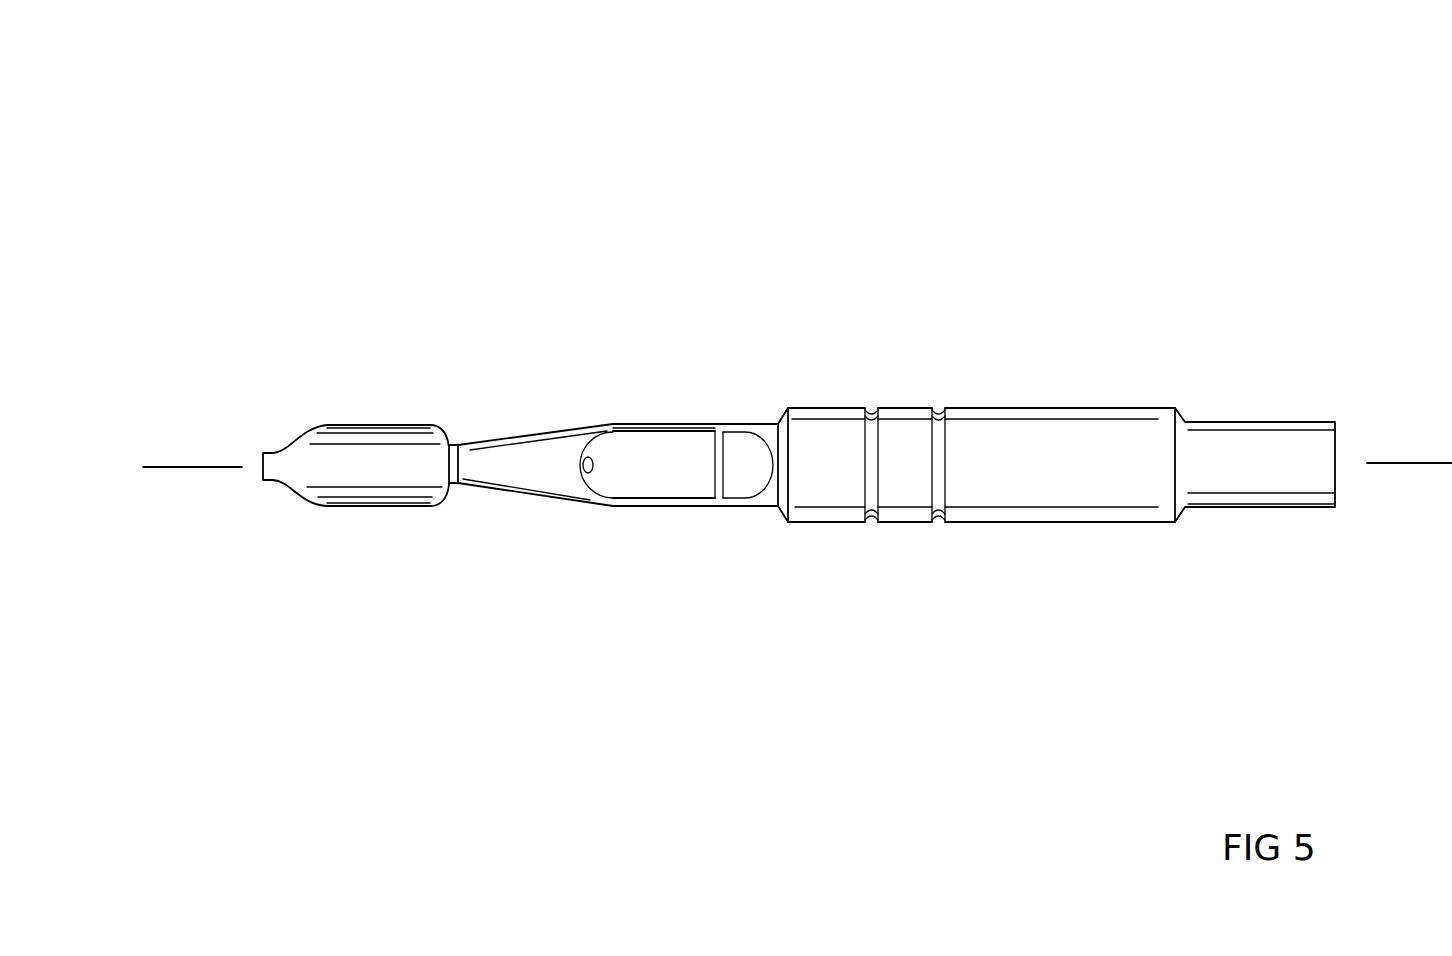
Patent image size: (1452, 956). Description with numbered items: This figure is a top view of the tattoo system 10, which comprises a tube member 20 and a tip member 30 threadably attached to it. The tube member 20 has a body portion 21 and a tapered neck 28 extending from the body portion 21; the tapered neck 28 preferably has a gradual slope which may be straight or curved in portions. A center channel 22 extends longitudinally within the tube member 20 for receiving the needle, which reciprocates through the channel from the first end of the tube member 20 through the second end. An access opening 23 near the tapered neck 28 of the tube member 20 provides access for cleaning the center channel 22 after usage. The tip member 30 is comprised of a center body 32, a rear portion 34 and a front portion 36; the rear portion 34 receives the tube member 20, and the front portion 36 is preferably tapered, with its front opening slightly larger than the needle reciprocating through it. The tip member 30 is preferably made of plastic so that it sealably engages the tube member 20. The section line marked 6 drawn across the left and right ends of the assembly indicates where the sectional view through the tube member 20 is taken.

The tattoo system 10 is at (1040, 215).
The tube member 20 is at (978, 523).
The body portion 21 is at (1013, 425).
The center channel 22 is at (594, 464).
The access opening 23 is at (670, 443).
The tapered neck 28 is at (490, 462).
The tip member 30 is at (377, 512).
The center body 32 is at (372, 426).
The rear portion 34 is at (449, 457).
The front portion 36 is at (272, 466).
The section line 6- 6 is at (1416, 506).